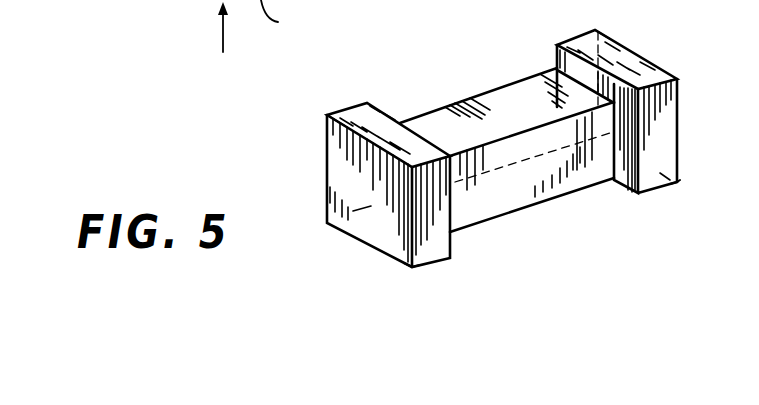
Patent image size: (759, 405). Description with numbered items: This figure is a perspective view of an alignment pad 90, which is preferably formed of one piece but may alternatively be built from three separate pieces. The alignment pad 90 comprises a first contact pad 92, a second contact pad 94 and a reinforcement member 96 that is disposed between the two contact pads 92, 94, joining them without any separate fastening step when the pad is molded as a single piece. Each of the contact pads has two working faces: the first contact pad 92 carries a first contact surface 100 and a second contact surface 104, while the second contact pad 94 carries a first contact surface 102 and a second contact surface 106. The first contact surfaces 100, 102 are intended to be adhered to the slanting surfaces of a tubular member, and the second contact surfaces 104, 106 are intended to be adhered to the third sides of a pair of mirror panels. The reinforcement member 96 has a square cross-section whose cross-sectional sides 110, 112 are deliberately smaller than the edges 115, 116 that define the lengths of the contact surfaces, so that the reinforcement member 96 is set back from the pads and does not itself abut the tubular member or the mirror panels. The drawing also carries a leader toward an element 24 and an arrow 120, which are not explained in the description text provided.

The support member 24 is at (296, 24).
The alignment pad 90 is at (306, 118).
The first contact pad 92 is at (350, 247).
The second contact pad 94 is at (670, 57).
The reinforcement member 96 is at (470, 86).
The first contact surface 100 is at (352, 118).
The first contact surface 102 is at (608, 48).
The second contact surface 104 is at (446, 236).
The second contact surface 106 is at (665, 135).
The cross-sectional side 110 is at (552, 73).
The cross-sectional side 112 is at (613, 160).
The edge 115 is at (333, 139).
The edge 116 is at (404, 262).
The direction of movement 120 is at (223, 40).